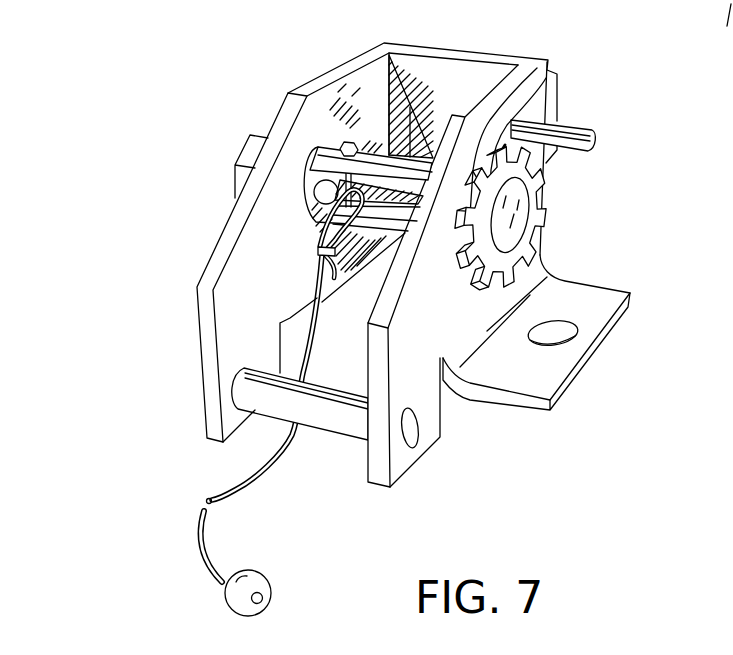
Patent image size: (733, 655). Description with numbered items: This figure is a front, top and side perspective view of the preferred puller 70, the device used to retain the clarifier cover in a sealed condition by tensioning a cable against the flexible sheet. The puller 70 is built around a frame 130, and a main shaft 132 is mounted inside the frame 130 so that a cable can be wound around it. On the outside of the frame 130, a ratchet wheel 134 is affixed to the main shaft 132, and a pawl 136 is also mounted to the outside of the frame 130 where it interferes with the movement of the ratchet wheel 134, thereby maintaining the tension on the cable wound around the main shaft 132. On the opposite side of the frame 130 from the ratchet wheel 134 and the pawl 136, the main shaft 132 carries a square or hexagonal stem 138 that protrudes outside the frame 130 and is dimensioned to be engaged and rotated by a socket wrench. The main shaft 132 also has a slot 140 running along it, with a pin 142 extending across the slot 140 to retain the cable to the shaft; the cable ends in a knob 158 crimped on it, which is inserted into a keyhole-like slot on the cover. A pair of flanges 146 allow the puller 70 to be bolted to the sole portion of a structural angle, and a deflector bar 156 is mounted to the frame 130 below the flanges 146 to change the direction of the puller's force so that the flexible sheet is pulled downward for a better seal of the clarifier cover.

The puller 70 is at (107, 110).
The frame 130 is at (350, 57).
The main shaft 132 is at (412, 107).
The ratchet wheel 134 is at (532, 232).
The pawl 136 is at (557, 102).
The square or hexagonal stem 138 is at (248, 140).
The slot 140 is at (305, 200).
The pin 142 is at (352, 140).
The flanges 146 is at (597, 362).
The deflector bar 156 is at (327, 433).
The knob 158 is at (265, 572).